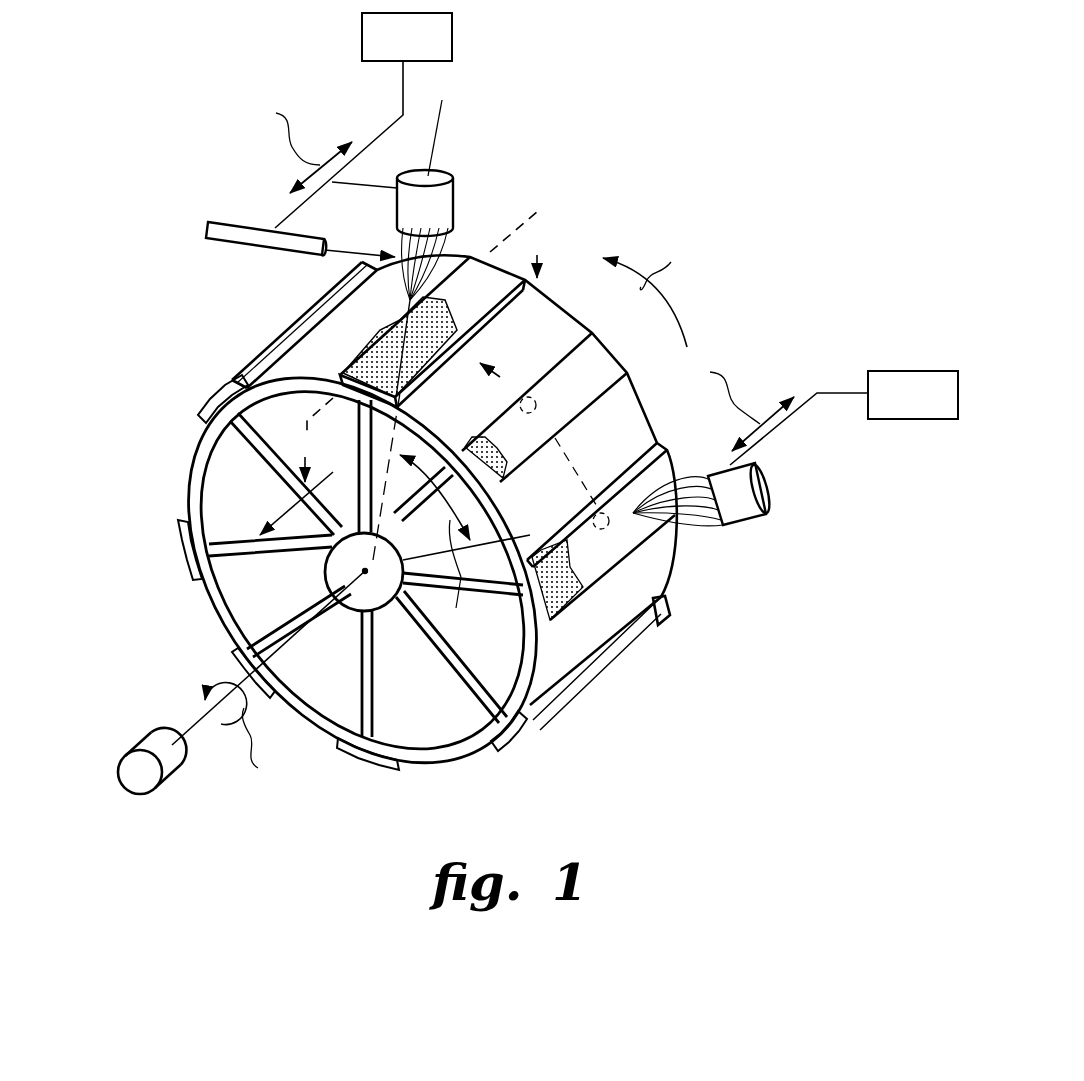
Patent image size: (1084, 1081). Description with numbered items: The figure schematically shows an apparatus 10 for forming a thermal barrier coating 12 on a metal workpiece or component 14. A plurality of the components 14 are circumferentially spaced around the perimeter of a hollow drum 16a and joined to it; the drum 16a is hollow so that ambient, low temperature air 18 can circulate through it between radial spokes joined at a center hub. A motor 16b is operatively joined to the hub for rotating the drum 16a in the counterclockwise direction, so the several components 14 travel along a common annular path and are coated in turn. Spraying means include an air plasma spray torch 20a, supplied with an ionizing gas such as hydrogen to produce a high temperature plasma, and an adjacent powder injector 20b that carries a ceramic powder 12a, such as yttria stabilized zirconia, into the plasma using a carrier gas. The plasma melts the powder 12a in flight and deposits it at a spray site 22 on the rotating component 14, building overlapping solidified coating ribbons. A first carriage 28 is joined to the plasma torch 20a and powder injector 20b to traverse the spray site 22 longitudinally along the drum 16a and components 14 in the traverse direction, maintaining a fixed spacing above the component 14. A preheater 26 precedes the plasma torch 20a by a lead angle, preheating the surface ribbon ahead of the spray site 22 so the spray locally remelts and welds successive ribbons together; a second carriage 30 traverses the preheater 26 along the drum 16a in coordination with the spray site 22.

The apparatus 10 is at (746, 222).
The thermal barrier coating 12 is at (390, 368).
The powder 12a is at (323, 277).
The component 14 is at (477, 256).
The drum 16a is at (207, 590).
The motor 16b is at (138, 742).
The air 18 is at (290, 507).
The plasma torch 20a is at (438, 175).
The powder injector 20b is at (205, 232).
The spray site 22 is at (528, 291).
The preheater 26 is at (746, 516).
The first carriage 28 is at (424, 51).
The second carriage 30 is at (930, 409).